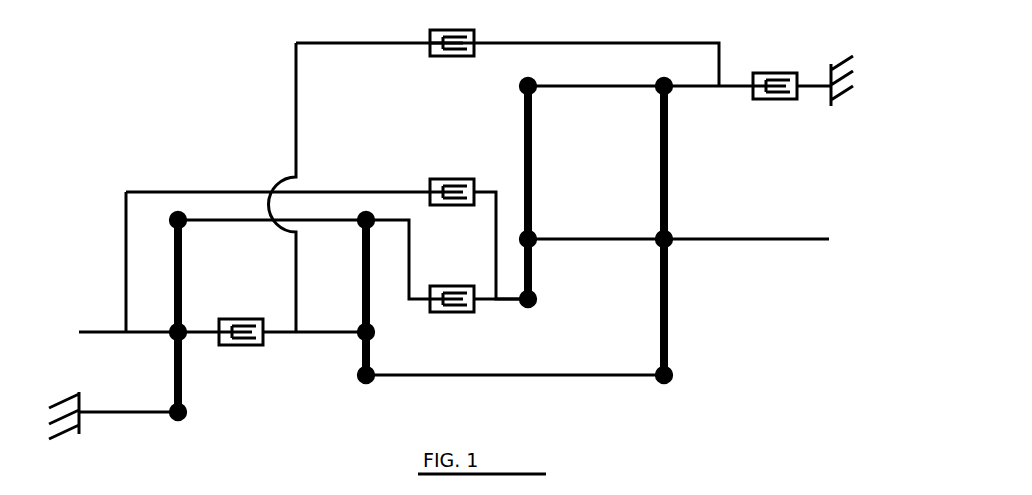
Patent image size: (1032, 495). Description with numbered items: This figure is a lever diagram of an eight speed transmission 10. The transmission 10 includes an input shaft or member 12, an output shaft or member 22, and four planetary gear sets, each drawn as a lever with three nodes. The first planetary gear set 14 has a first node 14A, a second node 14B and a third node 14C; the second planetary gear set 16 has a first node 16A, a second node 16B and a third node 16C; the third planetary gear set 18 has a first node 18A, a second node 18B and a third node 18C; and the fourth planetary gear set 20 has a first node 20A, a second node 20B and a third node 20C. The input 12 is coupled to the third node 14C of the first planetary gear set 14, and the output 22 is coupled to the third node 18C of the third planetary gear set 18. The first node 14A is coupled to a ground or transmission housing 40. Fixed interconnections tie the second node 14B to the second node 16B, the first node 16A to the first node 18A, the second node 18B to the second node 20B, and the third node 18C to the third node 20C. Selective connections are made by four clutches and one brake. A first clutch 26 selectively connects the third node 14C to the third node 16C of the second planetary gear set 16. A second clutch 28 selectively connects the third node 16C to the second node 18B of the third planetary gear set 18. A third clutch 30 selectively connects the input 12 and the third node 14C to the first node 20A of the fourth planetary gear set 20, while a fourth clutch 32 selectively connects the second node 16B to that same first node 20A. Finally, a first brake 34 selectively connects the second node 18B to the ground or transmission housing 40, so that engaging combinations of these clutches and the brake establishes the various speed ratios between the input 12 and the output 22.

The transmission 10 is at (705, 19).
The input shaft or member 12 is at (88, 328).
The first planetary gear set 14 is at (160, 430).
The first node of the first planetary gear set 14A is at (185, 414).
The second node of the first planetary gear set 14B is at (185, 222).
The third node of the first planetary gear set 14C is at (183, 323).
The second planetary gear set 16 is at (359, 404).
The first node of the second planetary gear set 16A is at (355, 378).
The second node of the second planetary gear set 16B is at (357, 224).
The third node of the second planetary gear set 16C is at (372, 334).
The third planetary gear set 18 is at (638, 393).
The first node of the third planetary gear set 18A is at (670, 369).
The second node of the third planetary gear set 18B is at (656, 90).
The third node of the third planetary gear set 18C is at (670, 243).
The fourth planetary gear set 20 is at (504, 315).
The first node of the fourth planetary gear set 20A is at (535, 303).
The second node of the fourth planetary gear set 20B is at (520, 90).
The third node of the fourth planetary gear set 20C is at (533, 231).
The output shaft or member 22 is at (743, 235).
The first clutch 26 is at (240, 343).
The second clutch 28 is at (445, 55).
The third clutch 30 is at (455, 176).
The fourth clutch 32 is at (462, 284).
The first brake 34 is at (762, 97).
The ground or transmission housing 40 is at (82, 426).